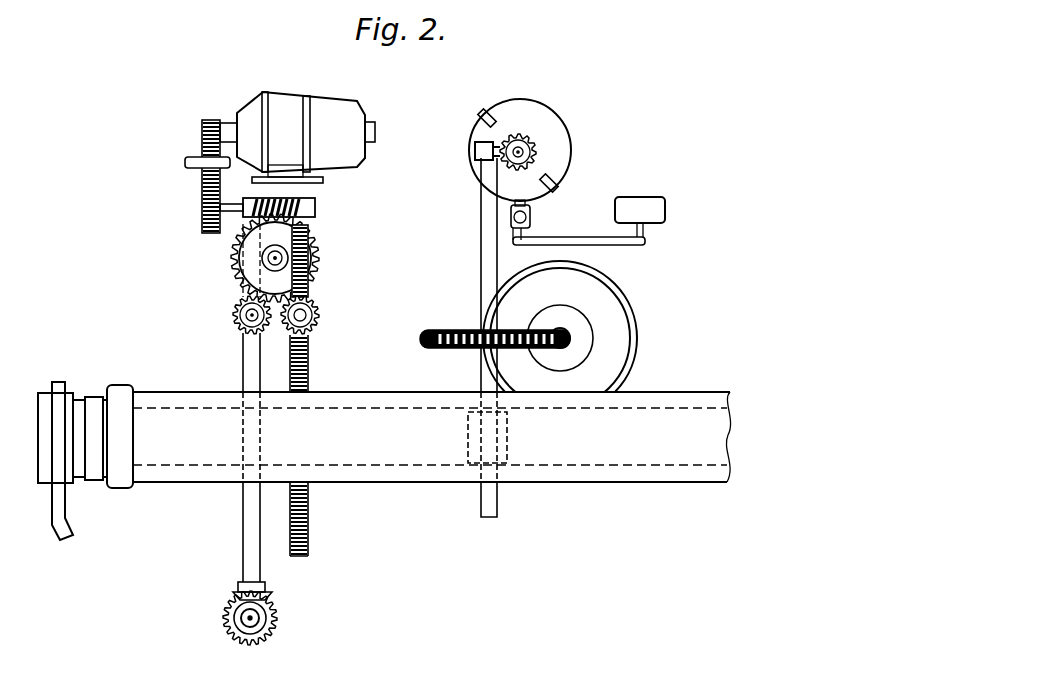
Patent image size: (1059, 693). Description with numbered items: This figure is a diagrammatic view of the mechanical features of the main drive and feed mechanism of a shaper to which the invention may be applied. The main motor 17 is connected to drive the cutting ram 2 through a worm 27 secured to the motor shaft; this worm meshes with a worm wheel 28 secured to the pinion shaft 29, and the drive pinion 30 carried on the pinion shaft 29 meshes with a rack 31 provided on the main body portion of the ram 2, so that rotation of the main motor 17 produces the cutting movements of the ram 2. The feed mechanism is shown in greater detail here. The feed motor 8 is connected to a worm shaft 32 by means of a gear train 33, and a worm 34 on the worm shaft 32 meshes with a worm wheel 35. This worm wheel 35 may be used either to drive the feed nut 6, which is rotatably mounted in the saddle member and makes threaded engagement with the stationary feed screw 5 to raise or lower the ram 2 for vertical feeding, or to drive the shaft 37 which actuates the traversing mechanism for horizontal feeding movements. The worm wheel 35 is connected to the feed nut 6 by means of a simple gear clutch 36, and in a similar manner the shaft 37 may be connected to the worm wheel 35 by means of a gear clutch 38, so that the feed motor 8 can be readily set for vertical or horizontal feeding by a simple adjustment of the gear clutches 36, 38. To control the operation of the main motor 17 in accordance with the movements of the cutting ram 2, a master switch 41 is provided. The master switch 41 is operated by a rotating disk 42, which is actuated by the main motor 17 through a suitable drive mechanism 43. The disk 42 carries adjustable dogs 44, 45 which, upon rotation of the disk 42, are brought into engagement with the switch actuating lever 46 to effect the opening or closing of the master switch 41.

The cutting ram 2 is at (396, 402).
The feed screw 5 is at (309, 355).
The feed nut 6 is at (318, 241).
The feed motor 8 is at (272, 100).
The main motor 17 is at (612, 318).
The worm 27 is at (566, 330).
The worm wheel 28 is at (452, 319).
The pinion shaft 29 is at (486, 357).
The drive pinion 30 is at (480, 448).
The rack 31 is at (593, 458).
The worm shaft 32 is at (316, 208).
The gear train 33 is at (201, 176).
The worm 34 is at (292, 200).
The worm wheel 35 is at (318, 263).
The gear clutch 36 is at (316, 311).
The shaft 37 is at (243, 352).
The gear clutch 38 is at (236, 306).
The master switch 41 is at (641, 200).
The rotating disk 42 is at (540, 114).
The drive mechanism 43 is at (484, 218).
The adjustable dog 44 is at (554, 188).
The adjustable dog 45 is at (489, 109).
The switch actuating lever 46 is at (531, 214).